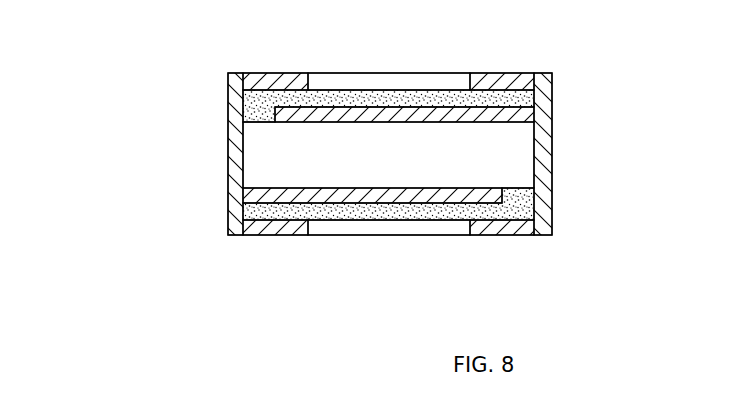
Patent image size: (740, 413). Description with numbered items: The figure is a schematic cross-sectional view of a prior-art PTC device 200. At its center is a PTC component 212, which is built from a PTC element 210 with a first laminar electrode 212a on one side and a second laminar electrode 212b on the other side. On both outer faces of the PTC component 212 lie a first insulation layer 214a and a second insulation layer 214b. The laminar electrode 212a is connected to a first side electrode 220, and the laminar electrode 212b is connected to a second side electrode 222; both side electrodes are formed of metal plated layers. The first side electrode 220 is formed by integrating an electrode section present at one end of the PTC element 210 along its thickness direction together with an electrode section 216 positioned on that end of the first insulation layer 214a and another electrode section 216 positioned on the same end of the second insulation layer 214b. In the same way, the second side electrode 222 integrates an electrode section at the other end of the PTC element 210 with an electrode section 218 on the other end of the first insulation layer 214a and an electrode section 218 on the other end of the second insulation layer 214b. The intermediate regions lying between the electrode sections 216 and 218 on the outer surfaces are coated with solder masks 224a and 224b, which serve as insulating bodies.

The PTC device 200 is at (565, 189).
The PTC element 210 is at (277, 158).
The PTC component 212 is at (133, 107).
The first laminar electrode 212a is at (277, 114).
The second laminar electrode 212b is at (257, 194).
The first insulation layer 214a is at (410, 98).
The second insulation layer 214b is at (408, 212).
The electrode section 216 is at (505, 84).
The electrode section 218 is at (271, 84).
The first side electrode 220 is at (543, 132).
The second side electrode 222 is at (238, 89).
The solder mask 224a is at (331, 85).
The solder mask 224b is at (331, 224).